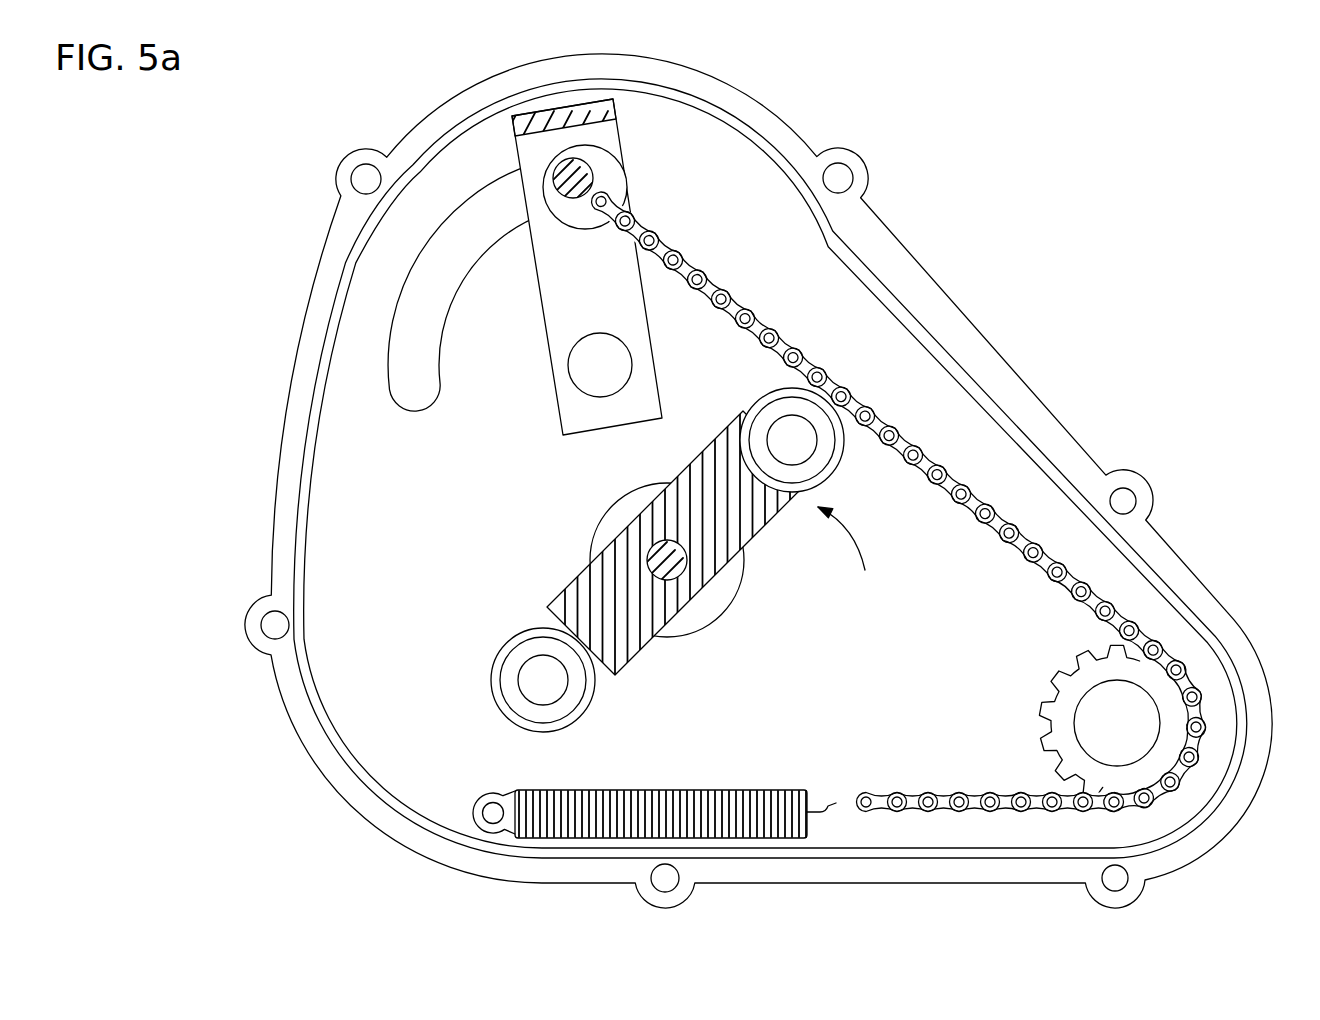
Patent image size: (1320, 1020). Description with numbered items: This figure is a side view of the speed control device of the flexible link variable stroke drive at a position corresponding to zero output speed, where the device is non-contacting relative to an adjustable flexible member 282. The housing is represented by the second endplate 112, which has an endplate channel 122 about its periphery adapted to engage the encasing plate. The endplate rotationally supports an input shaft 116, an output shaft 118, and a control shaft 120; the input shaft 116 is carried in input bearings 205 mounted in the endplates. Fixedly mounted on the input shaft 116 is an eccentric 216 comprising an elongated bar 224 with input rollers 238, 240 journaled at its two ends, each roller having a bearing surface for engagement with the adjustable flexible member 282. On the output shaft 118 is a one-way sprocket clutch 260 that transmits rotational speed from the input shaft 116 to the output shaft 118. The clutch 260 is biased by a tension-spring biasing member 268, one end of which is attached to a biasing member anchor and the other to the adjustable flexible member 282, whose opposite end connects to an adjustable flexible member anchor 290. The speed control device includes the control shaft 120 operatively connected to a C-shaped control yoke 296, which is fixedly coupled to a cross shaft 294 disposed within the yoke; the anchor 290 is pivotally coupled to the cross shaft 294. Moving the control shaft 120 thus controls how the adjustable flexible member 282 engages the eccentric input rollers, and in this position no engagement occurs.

The second endplate 112 is at (757, 113).
The endplate channel 122 is at (898, 288).
The control yoke 296 is at (537, 160).
The adjustable flexible member anchor 290 is at (608, 175).
The cross shaft 294 is at (573, 178).
The control shaft 120 is at (602, 380).
The adjustable flexible member 282 is at (662, 248).
The elongated bar 224 is at (728, 442).
The input roller 240 is at (800, 444).
The input roller 238 is at (548, 685).
The input shaft 116 is at (672, 557).
The input bearings 205 is at (703, 613).
The eccentric 216 is at (859, 556).
The biasing member 268 is at (735, 802).
The output shaft 118 is at (1118, 718).
The clutch 260 is at (1080, 772).